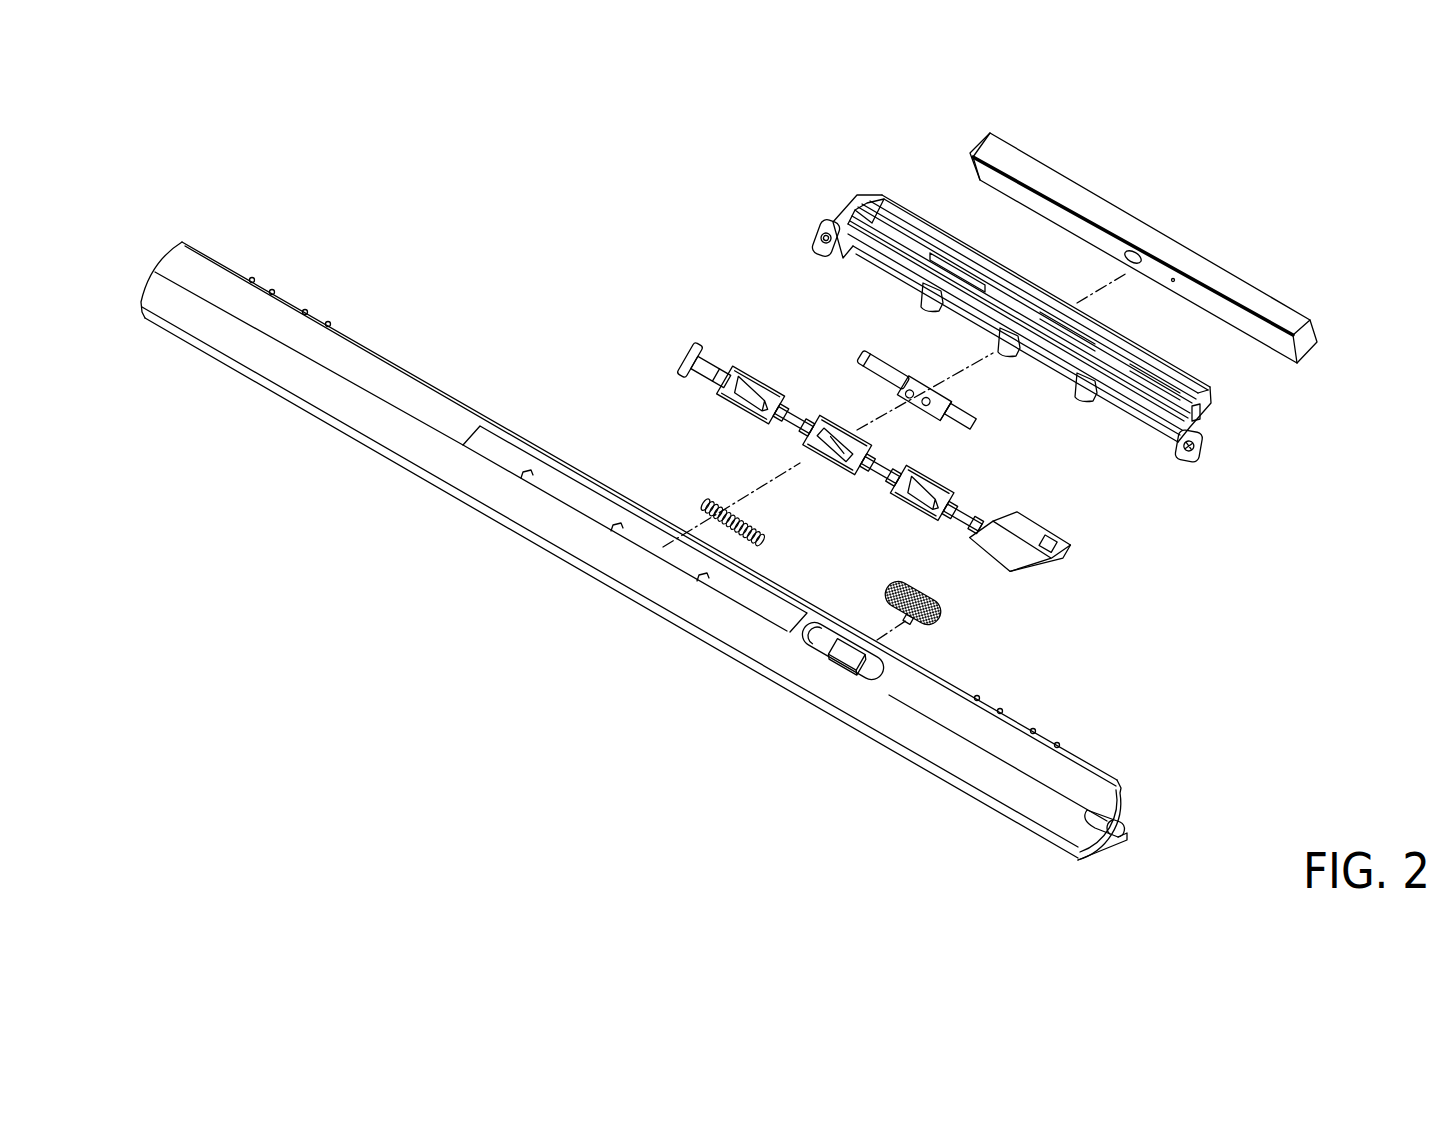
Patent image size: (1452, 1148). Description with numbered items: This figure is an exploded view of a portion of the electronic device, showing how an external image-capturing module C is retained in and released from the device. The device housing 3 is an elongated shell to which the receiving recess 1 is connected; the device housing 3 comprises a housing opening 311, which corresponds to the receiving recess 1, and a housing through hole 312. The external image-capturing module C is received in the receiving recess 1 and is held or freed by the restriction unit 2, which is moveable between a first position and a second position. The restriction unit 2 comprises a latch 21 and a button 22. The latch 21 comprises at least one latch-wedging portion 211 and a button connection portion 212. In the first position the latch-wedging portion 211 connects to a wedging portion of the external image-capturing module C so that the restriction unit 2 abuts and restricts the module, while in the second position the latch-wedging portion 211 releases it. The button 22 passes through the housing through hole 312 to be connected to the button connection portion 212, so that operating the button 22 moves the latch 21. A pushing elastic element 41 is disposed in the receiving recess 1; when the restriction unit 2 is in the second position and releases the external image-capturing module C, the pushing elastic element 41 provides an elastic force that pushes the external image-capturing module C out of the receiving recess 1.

The receiving recess 1 is at (835, 200).
The external image-capturing module C is at (990, 148).
The pushing elastic element 41 is at (868, 366).
The device housing 3 is at (642, 551).
The housing opening 311 is at (570, 497).
The housing through hole 312 is at (838, 656).
The restriction unit 2 is at (982, 519).
The latch 21 is at (908, 475).
The latch-wedging portion 211 is at (835, 443).
The button connection portion 212 is at (1053, 567).
The button 22 is at (945, 620).